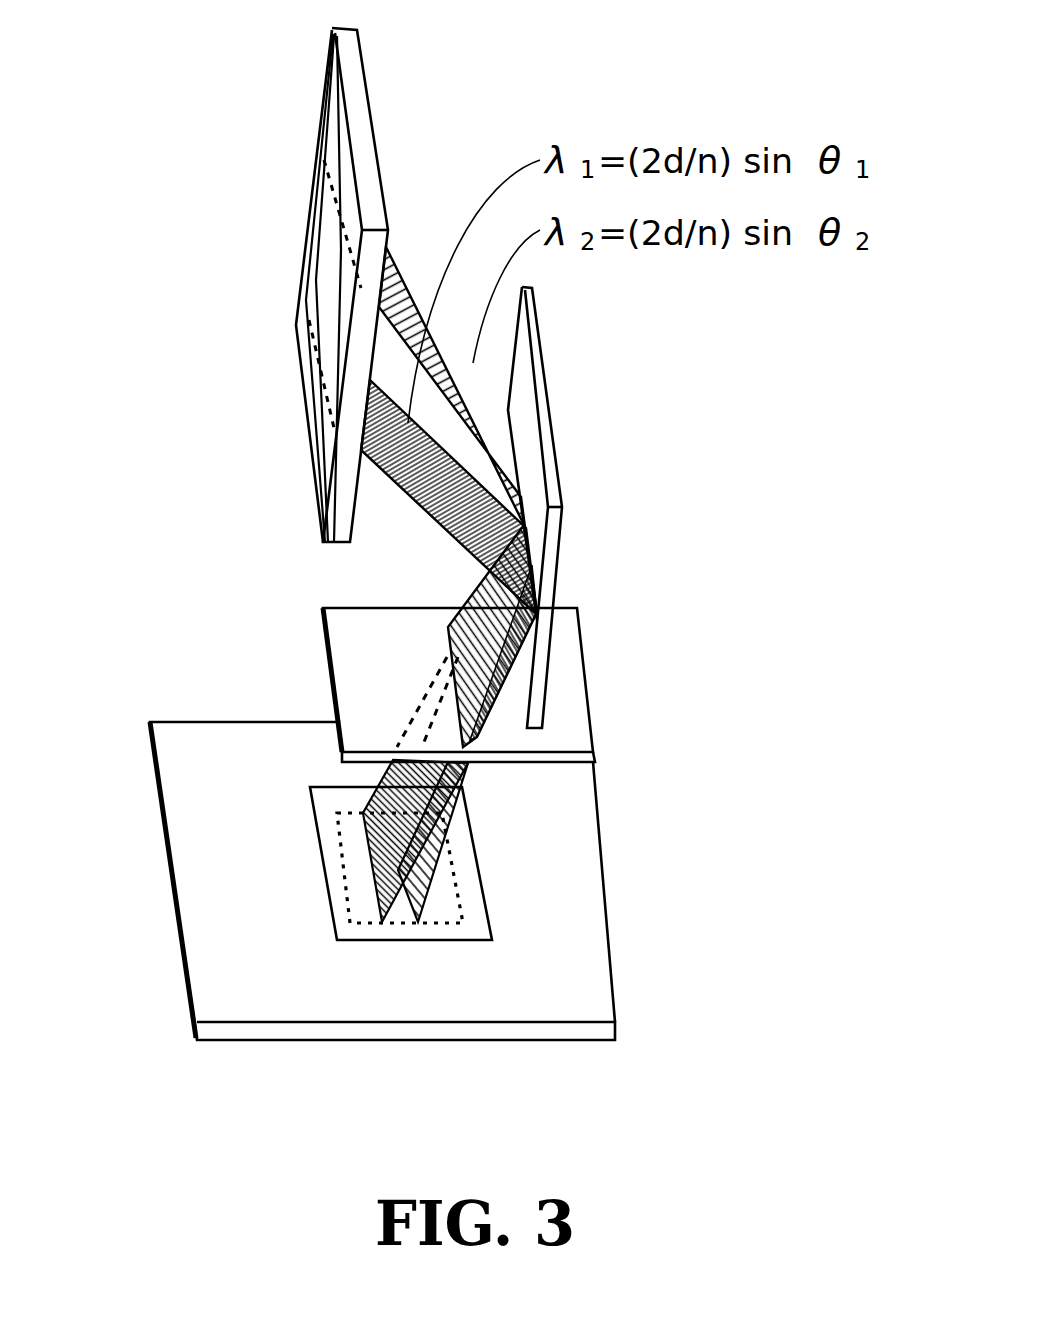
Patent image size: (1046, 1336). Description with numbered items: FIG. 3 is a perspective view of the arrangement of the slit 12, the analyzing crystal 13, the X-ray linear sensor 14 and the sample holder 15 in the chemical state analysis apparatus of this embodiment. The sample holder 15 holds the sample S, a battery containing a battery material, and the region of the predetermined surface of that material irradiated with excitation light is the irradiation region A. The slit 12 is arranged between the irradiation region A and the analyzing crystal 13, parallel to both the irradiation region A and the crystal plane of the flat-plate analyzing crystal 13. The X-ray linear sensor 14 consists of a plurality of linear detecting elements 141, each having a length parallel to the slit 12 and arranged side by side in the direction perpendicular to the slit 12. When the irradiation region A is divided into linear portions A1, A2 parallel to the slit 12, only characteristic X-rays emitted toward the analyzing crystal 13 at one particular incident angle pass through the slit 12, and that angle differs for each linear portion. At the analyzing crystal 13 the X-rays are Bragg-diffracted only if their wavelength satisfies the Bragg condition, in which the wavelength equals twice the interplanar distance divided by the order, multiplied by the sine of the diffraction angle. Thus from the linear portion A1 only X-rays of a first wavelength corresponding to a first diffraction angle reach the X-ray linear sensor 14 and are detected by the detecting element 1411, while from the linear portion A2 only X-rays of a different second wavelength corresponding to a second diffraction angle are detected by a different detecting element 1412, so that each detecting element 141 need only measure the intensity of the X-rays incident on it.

The slit 12 is at (450, 627).
The analyzing crystal 13 is at (556, 474).
The X-ray linear sensor 14 is at (337, 285).
The detecting elements 141 is at (303, 260).
The detecting element 1411 is at (312, 335).
The detecting element 1412 is at (322, 148).
The sample holder 15 is at (555, 978).
The irradiation region A is at (334, 813).
The linear portion A1 is at (372, 867).
The linear portion A2 is at (412, 893).
The sample S is at (478, 877).